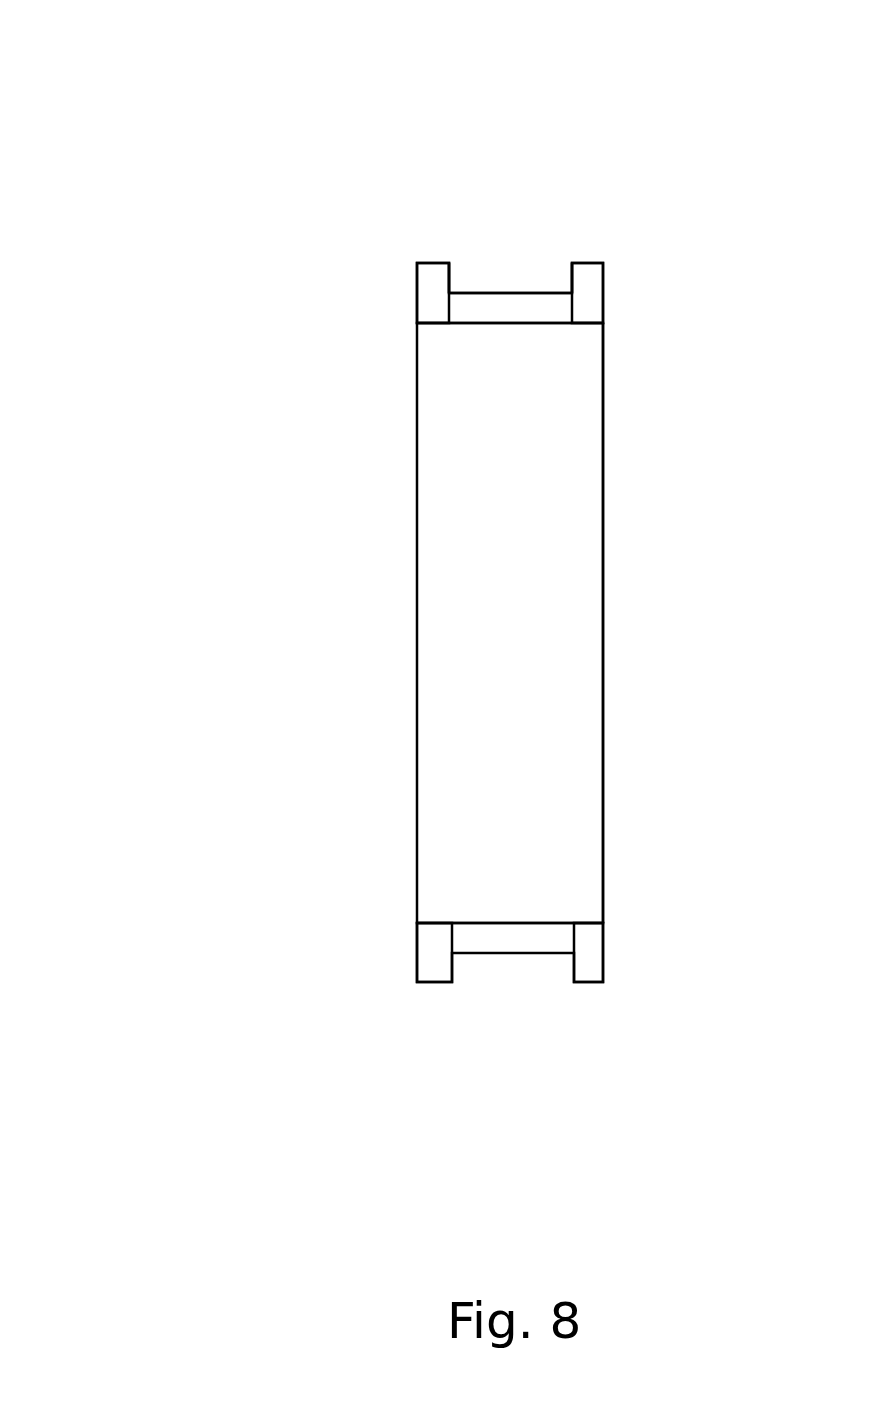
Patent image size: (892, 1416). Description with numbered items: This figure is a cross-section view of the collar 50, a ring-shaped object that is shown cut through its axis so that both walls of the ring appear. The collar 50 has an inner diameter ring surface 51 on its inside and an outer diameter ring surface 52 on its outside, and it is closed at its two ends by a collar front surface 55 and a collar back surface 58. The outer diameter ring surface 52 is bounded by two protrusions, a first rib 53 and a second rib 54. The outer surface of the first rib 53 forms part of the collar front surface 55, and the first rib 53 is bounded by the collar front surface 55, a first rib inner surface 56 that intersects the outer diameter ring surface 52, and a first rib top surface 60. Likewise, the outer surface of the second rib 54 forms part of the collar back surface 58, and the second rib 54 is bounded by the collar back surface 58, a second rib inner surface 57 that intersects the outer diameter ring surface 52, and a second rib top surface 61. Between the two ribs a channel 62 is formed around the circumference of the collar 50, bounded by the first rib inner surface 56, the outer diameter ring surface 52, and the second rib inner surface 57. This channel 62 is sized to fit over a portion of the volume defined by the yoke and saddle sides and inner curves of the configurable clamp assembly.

The collar 50 is at (472, 552).
The inner diameter ring surface 51 is at (540, 323).
The outer diameter ring surface 52 is at (529, 979).
The first rib 53 is at (417, 285).
The second rib 54 is at (603, 288).
The collar front surface 55 is at (416, 568).
The first rib inner surface 56 is at (269, 238).
The second rib inner surface 57 is at (653, 1011).
The collar back surface 58 is at (605, 758).
The first rib top surface 60 is at (331, 932).
The second rib top surface 61 is at (588, 262).
The channel 62 is at (513, 256).